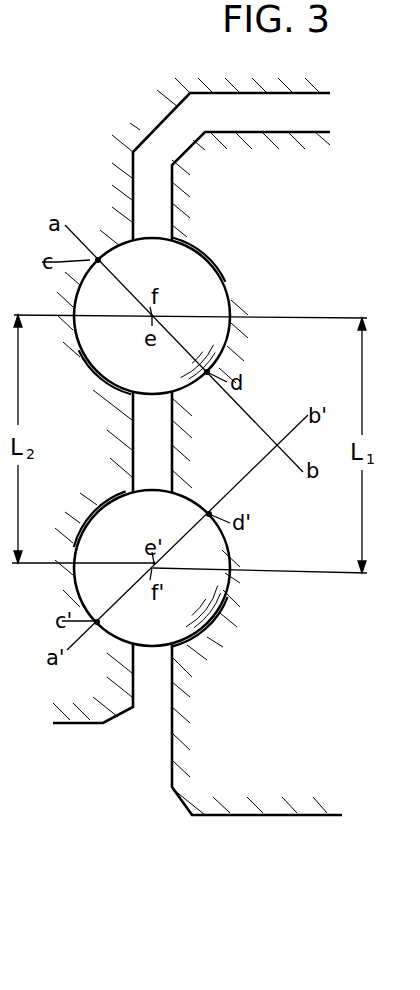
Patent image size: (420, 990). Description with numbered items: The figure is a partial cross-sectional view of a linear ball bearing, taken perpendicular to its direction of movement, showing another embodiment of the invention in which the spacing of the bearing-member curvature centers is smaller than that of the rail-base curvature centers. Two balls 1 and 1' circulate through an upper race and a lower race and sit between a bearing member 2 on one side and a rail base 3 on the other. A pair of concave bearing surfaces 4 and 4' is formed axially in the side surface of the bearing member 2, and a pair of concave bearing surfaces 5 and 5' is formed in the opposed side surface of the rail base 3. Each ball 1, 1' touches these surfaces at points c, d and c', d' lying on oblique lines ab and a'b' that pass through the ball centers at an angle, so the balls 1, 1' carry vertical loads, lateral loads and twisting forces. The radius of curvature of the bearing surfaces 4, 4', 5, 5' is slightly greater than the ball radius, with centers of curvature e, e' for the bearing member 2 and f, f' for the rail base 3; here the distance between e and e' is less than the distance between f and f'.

The ball 1 is at (169, 316).
The ball 1' is at (175, 568).
The bearing member 2 is at (147, 103).
The rail base 3 is at (218, 157).
The bearing surface 4 is at (101, 375).
The bearing surface 4' is at (98, 502).
The bearing surface 5 is at (199, 250).
The bearing surface 5' is at (203, 638).